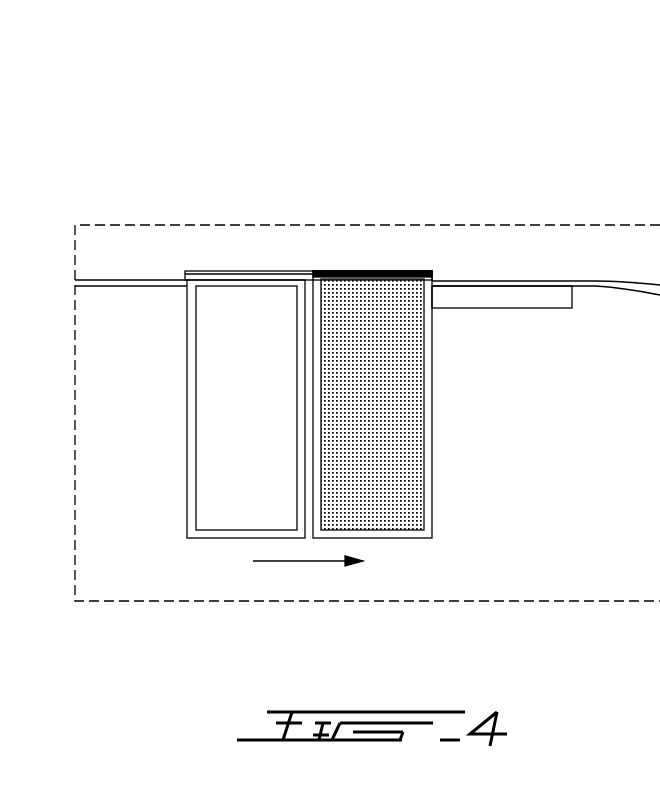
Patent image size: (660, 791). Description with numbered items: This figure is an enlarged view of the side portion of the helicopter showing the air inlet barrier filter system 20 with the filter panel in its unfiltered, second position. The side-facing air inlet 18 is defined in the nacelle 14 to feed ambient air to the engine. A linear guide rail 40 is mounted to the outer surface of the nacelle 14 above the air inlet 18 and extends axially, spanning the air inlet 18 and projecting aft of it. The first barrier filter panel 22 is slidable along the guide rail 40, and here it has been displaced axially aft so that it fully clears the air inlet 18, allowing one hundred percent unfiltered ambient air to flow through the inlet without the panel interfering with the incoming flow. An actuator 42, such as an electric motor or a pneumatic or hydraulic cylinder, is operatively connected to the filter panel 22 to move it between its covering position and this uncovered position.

The nacelle 14 is at (528, 418).
The air inlet barrier filter system 20 is at (383, 215).
The guide rail 40 is at (248, 270).
The actuator 42 is at (497, 298).
The air inlet 18 is at (227, 492).
The first barrier filter panel 22 is at (382, 492).